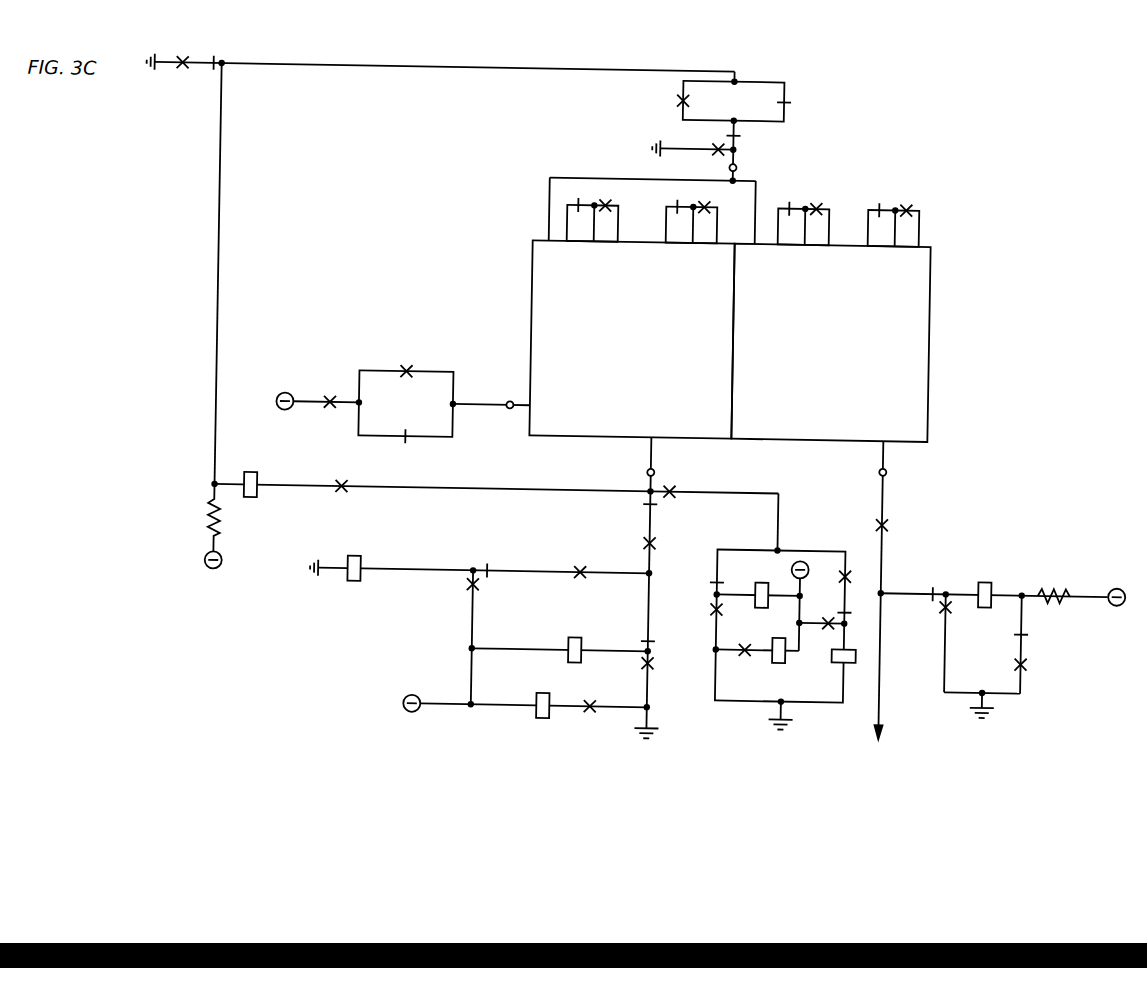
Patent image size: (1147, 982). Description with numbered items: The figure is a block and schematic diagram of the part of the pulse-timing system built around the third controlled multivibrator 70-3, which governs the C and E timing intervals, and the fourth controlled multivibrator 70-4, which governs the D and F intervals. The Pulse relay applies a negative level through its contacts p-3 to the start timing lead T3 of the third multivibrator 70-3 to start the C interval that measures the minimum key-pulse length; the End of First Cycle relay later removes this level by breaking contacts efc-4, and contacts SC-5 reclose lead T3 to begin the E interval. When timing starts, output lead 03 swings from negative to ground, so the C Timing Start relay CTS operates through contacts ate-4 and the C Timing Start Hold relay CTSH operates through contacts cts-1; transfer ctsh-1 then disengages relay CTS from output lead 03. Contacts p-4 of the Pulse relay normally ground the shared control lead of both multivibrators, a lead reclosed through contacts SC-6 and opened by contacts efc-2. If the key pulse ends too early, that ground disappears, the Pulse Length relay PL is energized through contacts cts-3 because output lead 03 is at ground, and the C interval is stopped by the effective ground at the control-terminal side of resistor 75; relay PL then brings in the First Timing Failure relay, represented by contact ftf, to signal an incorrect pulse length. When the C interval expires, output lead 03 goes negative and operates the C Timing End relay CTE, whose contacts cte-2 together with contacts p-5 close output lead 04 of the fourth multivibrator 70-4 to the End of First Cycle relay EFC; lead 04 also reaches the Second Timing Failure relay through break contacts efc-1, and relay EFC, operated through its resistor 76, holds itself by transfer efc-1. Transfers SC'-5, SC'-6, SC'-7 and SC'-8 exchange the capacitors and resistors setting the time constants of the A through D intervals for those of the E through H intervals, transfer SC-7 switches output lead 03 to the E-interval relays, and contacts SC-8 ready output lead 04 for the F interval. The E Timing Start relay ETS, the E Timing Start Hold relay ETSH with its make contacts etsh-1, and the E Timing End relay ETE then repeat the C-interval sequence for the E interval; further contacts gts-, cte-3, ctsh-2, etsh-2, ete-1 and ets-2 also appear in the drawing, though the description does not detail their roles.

The pulse relay contacts p-4 is at (174, 75).
The contact gts- is at (217, 75).
The second cycle relay contacts SC-6 is at (704, 103).
The end of first cycle relay contacts efc-2 is at (783, 101).
The first timing failure relay ftf is at (717, 131).
The second cycle relay transfer SC'-5 is at (593, 213).
The second cycle relay transfer SC'-6 is at (692, 215).
The second cycle relay transfer SC'-7 is at (804, 216).
The second cycle relay transfer SC'-8 is at (894, 218).
The third multivibrator 70-3 is at (530, 291).
The fourth multivibrator 70-4 is at (928, 290).
The pulse relay contacts p-3 is at (326, 392).
The end of first cycle relay contacts efc-4 is at (406, 407).
The second cycle relay contacts SC-5 is at (405, 362).
The start timing lead T3 is at (506, 395).
The pulse length relay PL is at (266, 476).
The resistor 75 is at (225, 522).
The C timing start relay contacts cts-3 is at (342, 475).
The output lead 03 is at (661, 474).
The second cycle relay transfer SC-7 is at (659, 504).
The A timing end relay contacts ate-4 is at (672, 544).
The C timing end relay CTE is at (371, 560).
The contact cte-3 is at (496, 585).
The contact ctsh-2 is at (571, 562).
The C timing start relay CTS is at (593, 638).
The C timing start hold relay transfer ctsh-1 is at (672, 655).
The C timing start hold relay CTSH is at (562, 695).
The C timing start relay contacts cts-1 is at (586, 718).
The E timing start hold relay make contacts etsh-1 is at (686, 598).
The E timing start relay ETS is at (779, 580).
The contact etsh-2 is at (851, 572).
The contact ete-1 is at (835, 610).
The E timing end relay ETE is at (862, 646).
The contact ets-2 is at (743, 640).
The E timing start hold relay ETSH is at (780, 658).
The output lead 04 is at (893, 474).
The C timing end relay contacts cte-2 is at (905, 525).
The end of first cycle relay transfer efc-1 is at (938, 601).
The end of first cycle relay EFC is at (1002, 576).
The resistor 76 is at (1051, 583).
The second cycle relay contacts SC-8 is at (1039, 636).
The pulse relay contacts p-5 is at (1035, 666).